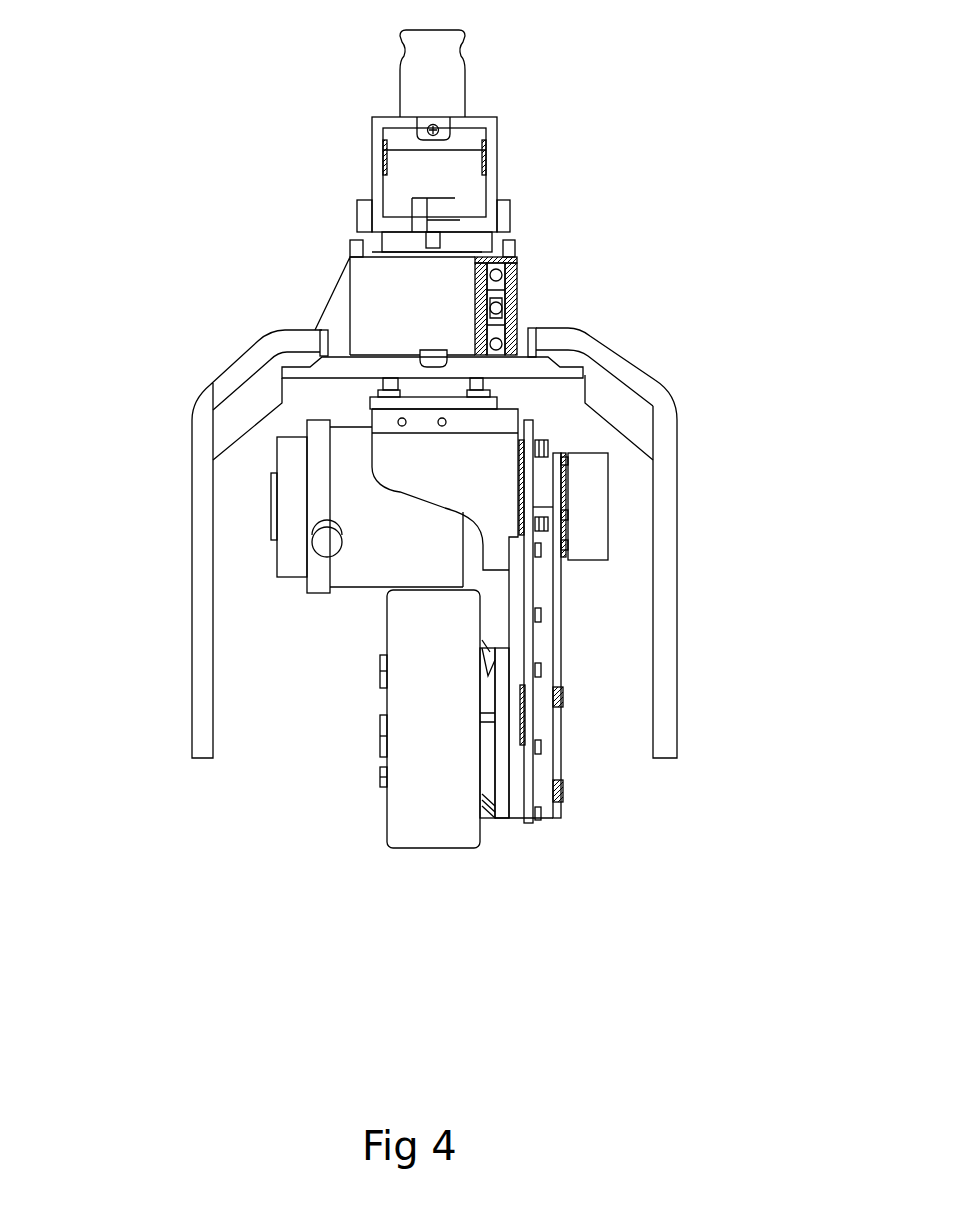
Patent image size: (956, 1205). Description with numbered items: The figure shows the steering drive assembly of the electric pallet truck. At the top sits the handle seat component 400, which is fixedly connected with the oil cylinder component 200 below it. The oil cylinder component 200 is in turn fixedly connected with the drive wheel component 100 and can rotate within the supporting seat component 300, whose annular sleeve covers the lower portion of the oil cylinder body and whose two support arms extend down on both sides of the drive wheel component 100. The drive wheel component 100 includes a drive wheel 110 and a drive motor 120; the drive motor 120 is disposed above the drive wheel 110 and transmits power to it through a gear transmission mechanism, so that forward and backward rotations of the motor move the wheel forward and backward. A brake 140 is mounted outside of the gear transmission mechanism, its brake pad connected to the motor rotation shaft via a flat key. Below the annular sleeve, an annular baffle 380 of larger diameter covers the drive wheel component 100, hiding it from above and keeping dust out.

The drive wheel component 100 is at (437, 727).
The drive wheel 110 is at (403, 663).
The drive motor 120 is at (295, 510).
The brake 140 is at (592, 498).
The oil cylinder component 200 is at (408, 90).
The supporting seat component 300 is at (368, 290).
The annular baffle 380 is at (519, 266).
The handle seat component 400 is at (408, 187).